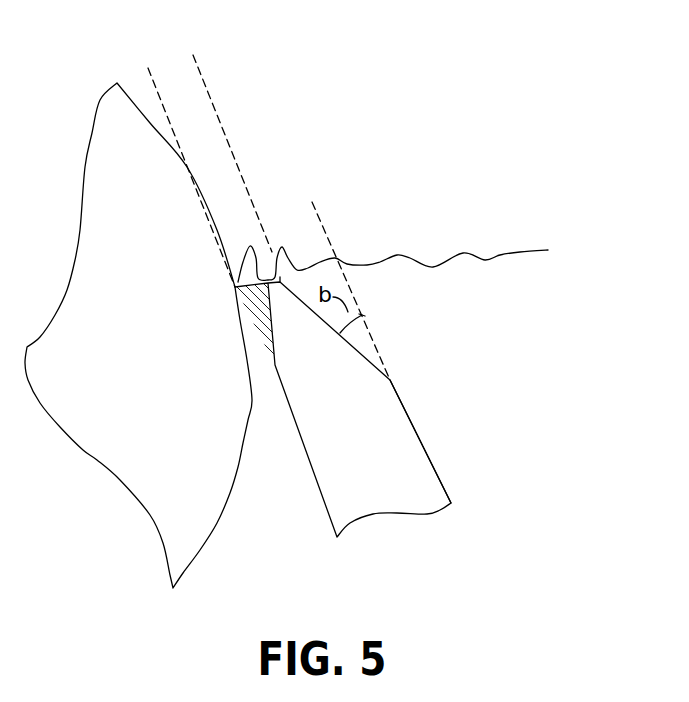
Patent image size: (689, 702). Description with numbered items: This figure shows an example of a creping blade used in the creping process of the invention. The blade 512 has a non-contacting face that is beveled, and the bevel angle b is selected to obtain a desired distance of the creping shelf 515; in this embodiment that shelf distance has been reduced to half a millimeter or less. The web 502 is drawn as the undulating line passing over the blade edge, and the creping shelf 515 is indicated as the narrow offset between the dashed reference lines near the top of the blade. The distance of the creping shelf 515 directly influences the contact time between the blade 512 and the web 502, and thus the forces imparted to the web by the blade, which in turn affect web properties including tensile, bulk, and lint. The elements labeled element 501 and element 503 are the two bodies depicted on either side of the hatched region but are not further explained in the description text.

The first blade portion 501 is at (348, 473).
The web 502 is at (525, 243).
The second blade portion 503 is at (124, 358).
The blade 512 is at (420, 437).
The creping shelf 515 is at (153, 82).